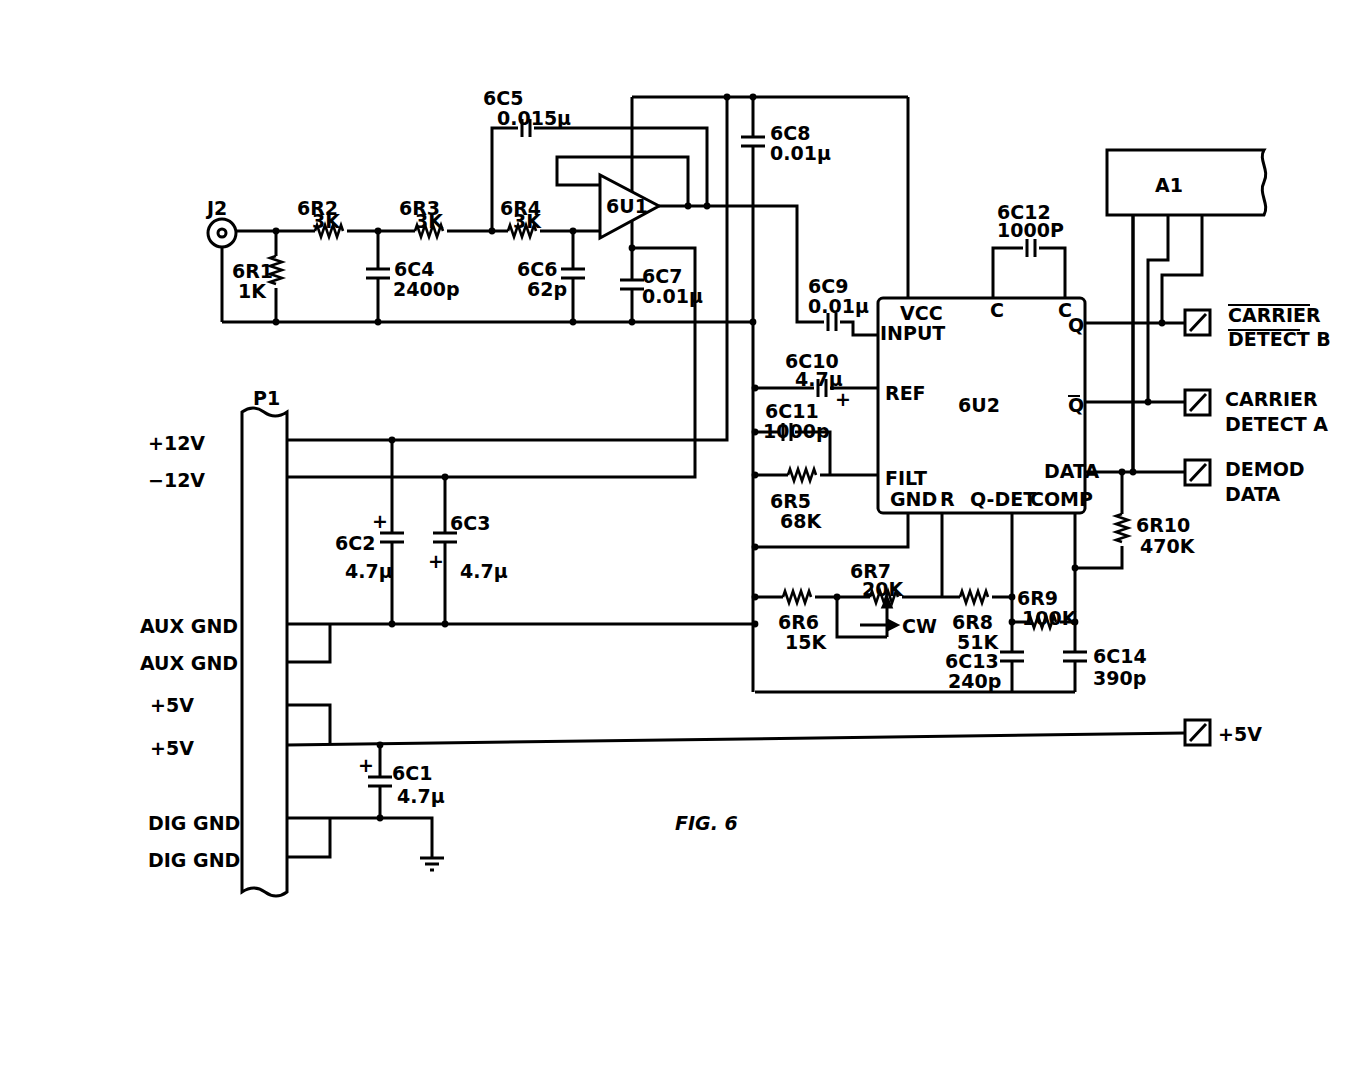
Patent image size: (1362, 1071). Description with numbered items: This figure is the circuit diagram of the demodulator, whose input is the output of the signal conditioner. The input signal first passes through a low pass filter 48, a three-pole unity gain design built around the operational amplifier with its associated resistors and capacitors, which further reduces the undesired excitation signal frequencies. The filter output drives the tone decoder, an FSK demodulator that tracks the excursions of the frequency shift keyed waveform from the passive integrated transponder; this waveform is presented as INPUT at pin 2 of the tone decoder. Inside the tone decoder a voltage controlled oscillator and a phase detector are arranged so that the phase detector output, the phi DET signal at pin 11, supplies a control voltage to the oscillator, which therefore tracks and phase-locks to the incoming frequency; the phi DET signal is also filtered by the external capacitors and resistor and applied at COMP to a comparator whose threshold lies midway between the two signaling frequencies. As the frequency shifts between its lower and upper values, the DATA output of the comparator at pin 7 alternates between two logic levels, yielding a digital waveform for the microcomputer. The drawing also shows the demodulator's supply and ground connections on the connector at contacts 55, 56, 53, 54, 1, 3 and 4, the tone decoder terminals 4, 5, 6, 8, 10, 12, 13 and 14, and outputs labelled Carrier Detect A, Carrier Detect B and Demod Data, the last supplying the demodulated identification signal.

The low pass filter 48 is at (404, 190).
The P1 pin 55 (+12V) 55 is at (491, 275).
The P1 pin 56 (-12V) 56 is at (475, 369).
The P1 pin 53 (AUX GND) 53 is at (505, 626).
The P1 pin 54 (AUX GND) 54 is at (293, 649).
The pin 1 is at (697, 421).
The pin 2 (INPUT) 2 is at (721, 490).
The pin 3 is at (730, 540).
The pin 4 is at (583, 692).
The pin 5 is at (883, 266).
The pin 6 is at (1135, 393).
The pin 7 (DATA output) 7 is at (1135, 461).
The pin 8 is at (1072, 602).
The pin 10 is at (771, 289).
The pin 11 (phase detector output) 11 is at (828, 394).
The pin 12 is at (931, 555).
The pin 13 is at (1055, 273).
The pin 14 is at (996, 273).